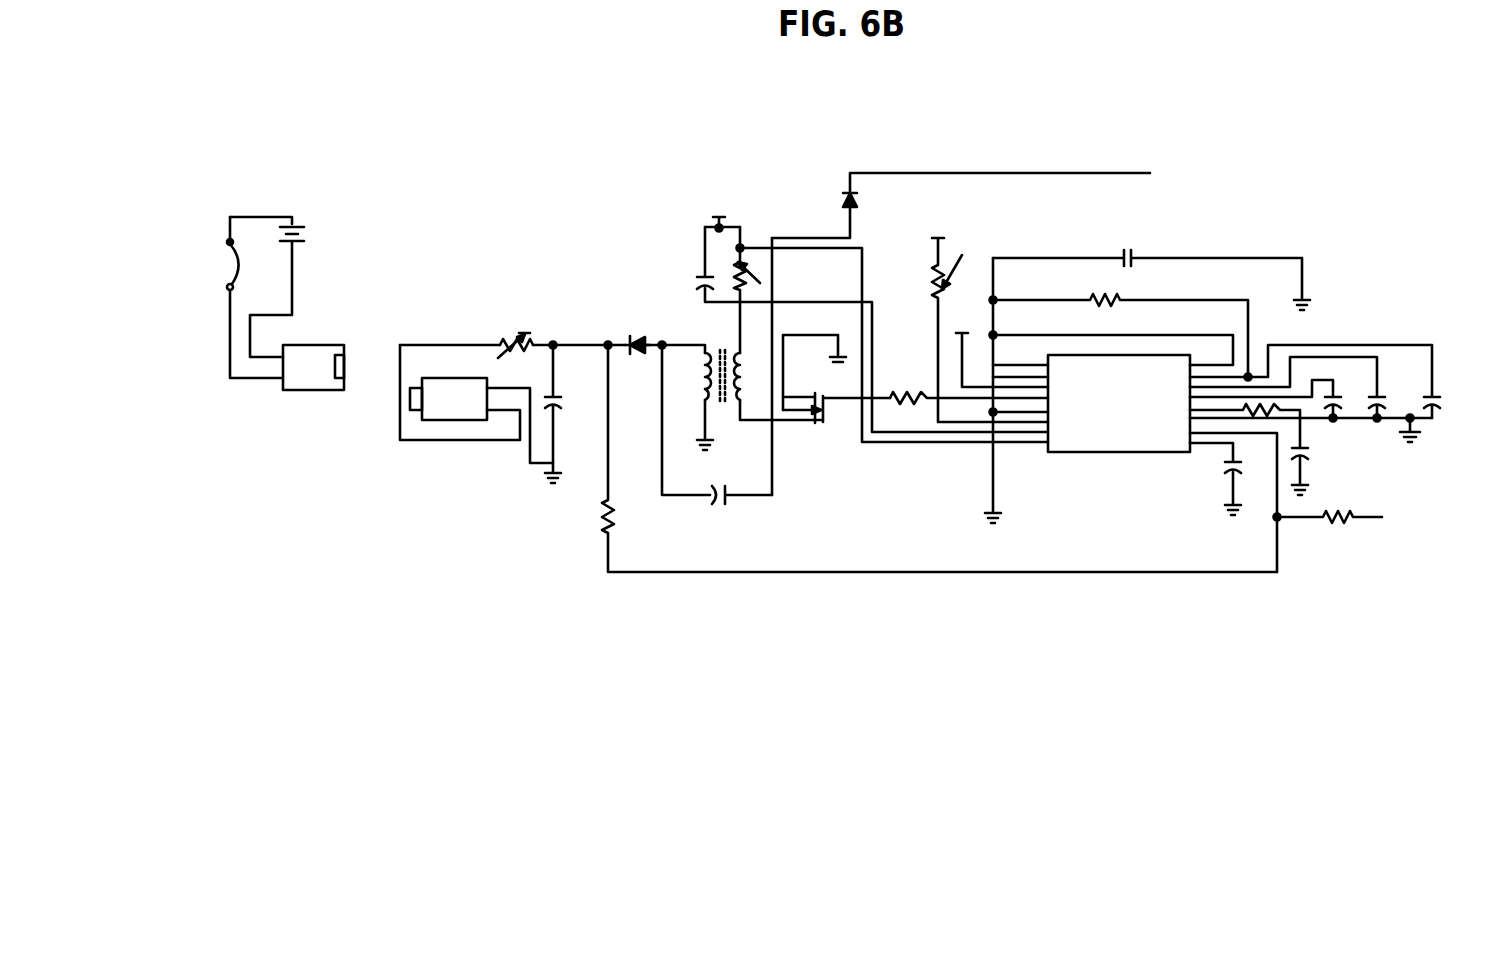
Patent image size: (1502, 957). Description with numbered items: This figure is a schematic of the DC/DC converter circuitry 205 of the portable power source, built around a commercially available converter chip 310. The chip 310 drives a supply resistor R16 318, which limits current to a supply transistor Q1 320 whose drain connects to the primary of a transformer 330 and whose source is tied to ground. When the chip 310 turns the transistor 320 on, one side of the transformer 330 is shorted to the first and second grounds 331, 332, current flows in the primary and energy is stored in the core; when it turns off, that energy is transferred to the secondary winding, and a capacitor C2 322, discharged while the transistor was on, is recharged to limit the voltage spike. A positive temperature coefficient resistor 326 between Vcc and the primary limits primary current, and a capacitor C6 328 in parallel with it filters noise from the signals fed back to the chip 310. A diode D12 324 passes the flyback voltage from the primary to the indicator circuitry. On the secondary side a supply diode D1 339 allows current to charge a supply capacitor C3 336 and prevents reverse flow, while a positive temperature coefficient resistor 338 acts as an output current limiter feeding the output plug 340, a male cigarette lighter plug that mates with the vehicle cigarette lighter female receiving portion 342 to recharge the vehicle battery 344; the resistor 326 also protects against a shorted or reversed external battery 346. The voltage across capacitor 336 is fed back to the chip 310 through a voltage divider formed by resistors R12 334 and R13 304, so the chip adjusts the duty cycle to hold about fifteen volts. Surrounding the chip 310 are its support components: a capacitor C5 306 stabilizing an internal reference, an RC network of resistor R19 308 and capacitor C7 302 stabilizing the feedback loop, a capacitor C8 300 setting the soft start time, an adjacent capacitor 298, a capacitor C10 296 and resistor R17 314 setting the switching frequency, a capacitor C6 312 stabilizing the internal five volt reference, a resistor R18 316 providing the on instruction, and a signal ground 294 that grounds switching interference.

The control circuit 205 is at (941, 608).
The signal ground 294 is at (1412, 438).
The capacitor C10 296 is at (1436, 395).
The capacitor 298 is at (1382, 393).
The capacitor C8 300 is at (1337, 393).
The capacitor C7 302 is at (1304, 456).
The resistor R13 304 is at (1345, 523).
The capacitor C5 306 is at (1230, 467).
The resistor R19 308 is at (1282, 413).
The converter chip 310 is at (1141, 423).
The capacitor C6 312 is at (1141, 240).
The resistor R17 314 is at (1112, 300).
The resistor R18 316 is at (946, 262).
The supply resistor R16 318 is at (903, 395).
The supply transistor Q1 320 is at (815, 425).
The capacitor C2 322 is at (734, 496).
The diode D12 324 is at (857, 197).
The positive temperature coefficient resistor 326 is at (752, 281).
The capacitor C6 328 is at (706, 281).
The transformer 330 is at (700, 377).
The first ground 331 is at (814, 372).
The second ground 332 is at (700, 458).
The feedback resistor R12 334 is at (604, 514).
The supply capacitor C3 336 is at (559, 399).
The positive temperature coefficient resistor 338 is at (517, 336).
The supply diode D1 339 is at (641, 339).
The output plug 340 is at (452, 392).
The vehicle cigarette lighter female receiving portion 342 is at (310, 382).
The vehicle battery 344 is at (303, 243).
The external battery 346 is at (228, 272).